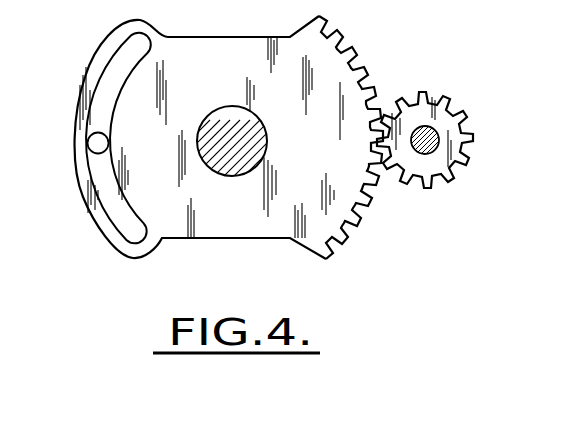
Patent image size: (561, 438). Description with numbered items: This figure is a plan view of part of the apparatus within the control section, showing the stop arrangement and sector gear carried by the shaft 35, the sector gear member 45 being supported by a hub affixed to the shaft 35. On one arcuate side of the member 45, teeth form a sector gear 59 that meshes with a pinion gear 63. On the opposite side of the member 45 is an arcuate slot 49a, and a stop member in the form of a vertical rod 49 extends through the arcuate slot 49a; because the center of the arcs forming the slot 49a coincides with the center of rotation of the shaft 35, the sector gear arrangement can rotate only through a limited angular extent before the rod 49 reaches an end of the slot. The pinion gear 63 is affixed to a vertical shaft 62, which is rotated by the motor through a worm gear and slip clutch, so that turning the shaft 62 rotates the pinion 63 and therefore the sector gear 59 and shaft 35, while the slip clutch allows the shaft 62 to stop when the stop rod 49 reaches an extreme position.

The sector gear plate / rack segment 45 is at (197, 59).
The sector gear 59 is at (373, 78).
The arcuate slot 49a is at (107, 83).
The vertical rod 49 is at (88, 143).
The shaft 35 is at (224, 176).
The pinion gear 63 is at (463, 107).
The vertical shaft 62 is at (430, 154).